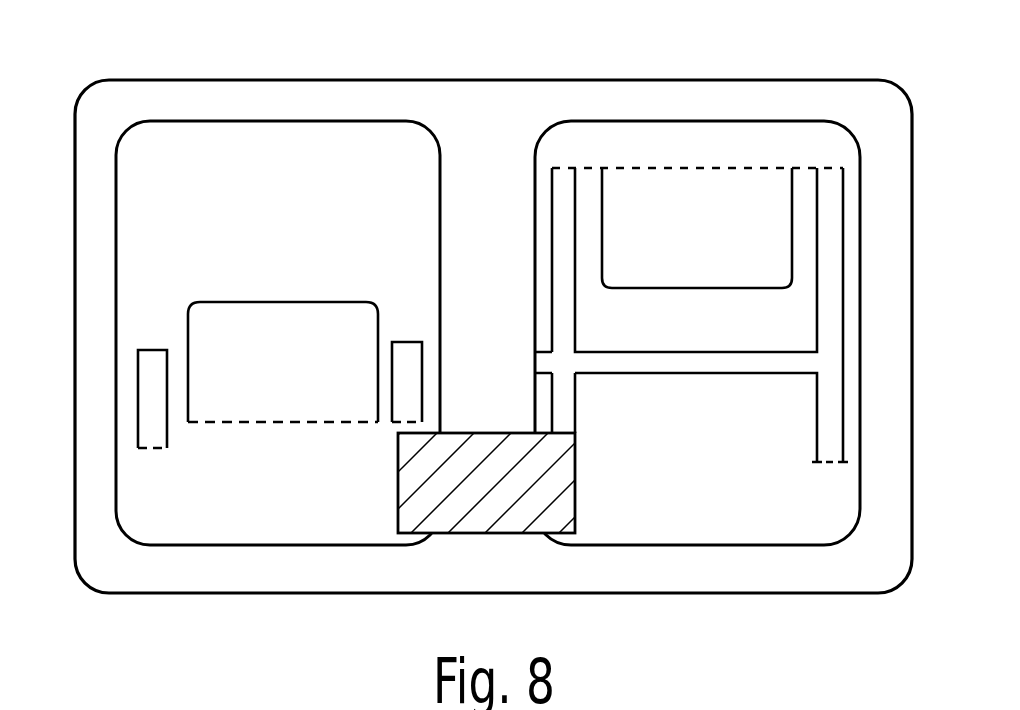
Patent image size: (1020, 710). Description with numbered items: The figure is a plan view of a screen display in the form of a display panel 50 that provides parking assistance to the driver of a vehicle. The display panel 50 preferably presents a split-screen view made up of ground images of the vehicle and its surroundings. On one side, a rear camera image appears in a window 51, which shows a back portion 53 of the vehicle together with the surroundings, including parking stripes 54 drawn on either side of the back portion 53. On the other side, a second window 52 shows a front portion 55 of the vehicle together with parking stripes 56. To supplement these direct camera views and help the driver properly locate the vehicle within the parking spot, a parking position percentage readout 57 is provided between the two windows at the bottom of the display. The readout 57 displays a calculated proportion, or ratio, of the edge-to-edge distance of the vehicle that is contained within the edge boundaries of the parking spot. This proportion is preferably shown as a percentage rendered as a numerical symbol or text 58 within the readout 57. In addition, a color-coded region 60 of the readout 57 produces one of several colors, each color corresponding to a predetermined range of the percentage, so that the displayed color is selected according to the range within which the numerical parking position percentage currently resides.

The display panel 50 is at (522, 73).
The window 51 is at (128, 215).
The second window 52 is at (762, 121).
The back portion 53 is at (260, 302).
The parking stripes 54 is at (152, 350).
The front portion 55 is at (680, 290).
The parking stripes 56 is at (702, 367).
The parking position percentage readout 57 is at (475, 467).
The numerical symbol or text 58 is at (497, 488).
The color-coded region 60 is at (497, 433).